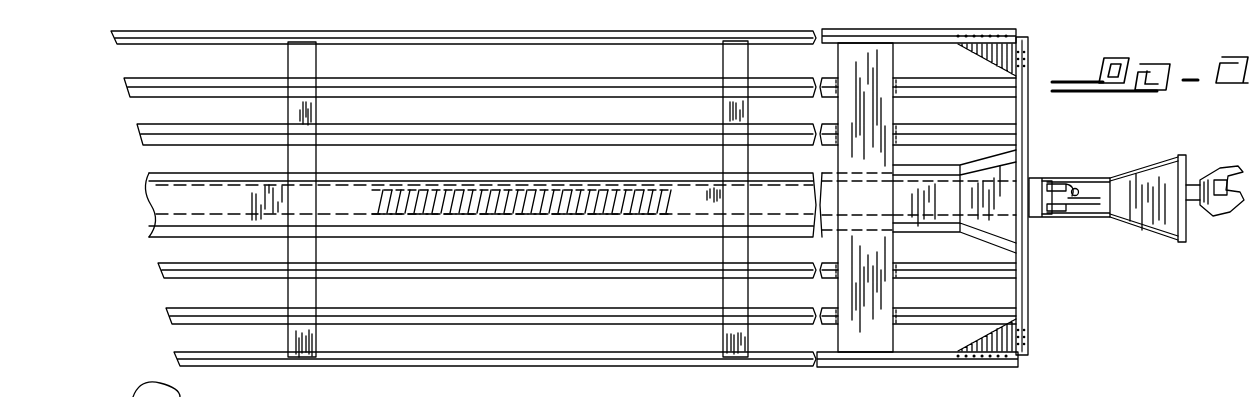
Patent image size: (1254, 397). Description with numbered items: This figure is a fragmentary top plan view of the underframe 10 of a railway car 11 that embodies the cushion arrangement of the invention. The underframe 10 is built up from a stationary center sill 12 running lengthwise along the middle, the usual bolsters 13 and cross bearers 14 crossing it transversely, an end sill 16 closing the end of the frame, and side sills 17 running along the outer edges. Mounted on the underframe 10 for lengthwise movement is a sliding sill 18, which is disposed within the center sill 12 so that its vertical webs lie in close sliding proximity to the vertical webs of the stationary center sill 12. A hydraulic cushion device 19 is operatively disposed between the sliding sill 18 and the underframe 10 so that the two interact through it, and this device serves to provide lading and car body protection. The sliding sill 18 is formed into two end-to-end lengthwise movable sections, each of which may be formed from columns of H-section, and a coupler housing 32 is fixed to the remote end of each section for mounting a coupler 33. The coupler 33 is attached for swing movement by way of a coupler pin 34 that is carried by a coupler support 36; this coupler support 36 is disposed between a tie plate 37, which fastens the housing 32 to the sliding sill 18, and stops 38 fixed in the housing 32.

The underframe 10 is at (940, 366).
The railway car 11 is at (730, 27).
The center sill 12 is at (178, 199).
The bolster 13 is at (849, 335).
The cross bearer 14 is at (308, 338).
The end sill 16 is at (1028, 333).
The side sill 17 is at (463, 31).
The sliding sill 18 is at (1033, 218).
The hydraulic cushion device 19 is at (563, 198).
The coupler housing 32 is at (1108, 217).
The coupler 33 is at (1225, 209).
The coupler pin 34 is at (1079, 191).
The coupler support 36 is at (1052, 186).
The tie plate 37 is at (1034, 184).
The stop 38 is at (1058, 213).